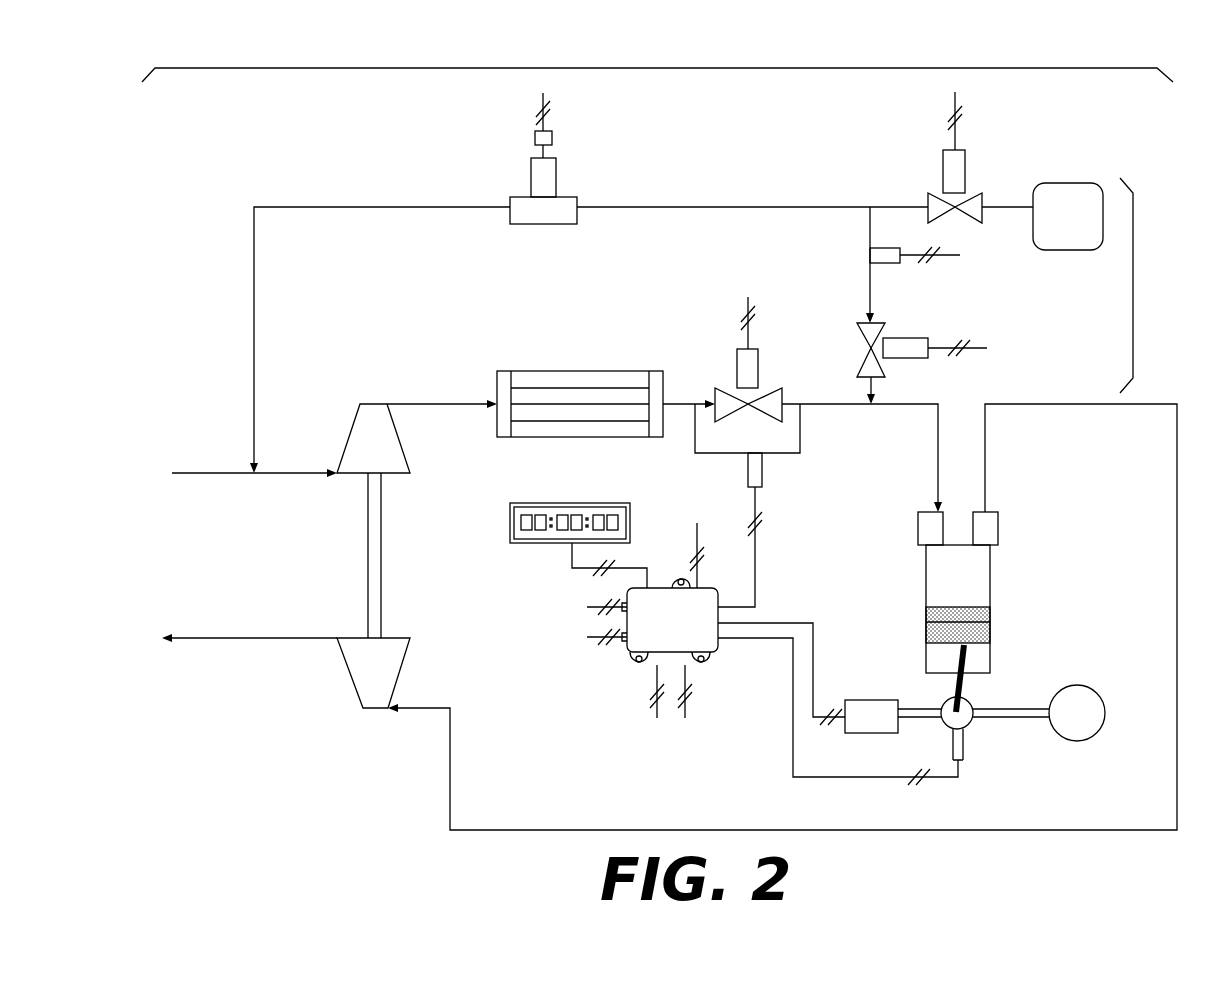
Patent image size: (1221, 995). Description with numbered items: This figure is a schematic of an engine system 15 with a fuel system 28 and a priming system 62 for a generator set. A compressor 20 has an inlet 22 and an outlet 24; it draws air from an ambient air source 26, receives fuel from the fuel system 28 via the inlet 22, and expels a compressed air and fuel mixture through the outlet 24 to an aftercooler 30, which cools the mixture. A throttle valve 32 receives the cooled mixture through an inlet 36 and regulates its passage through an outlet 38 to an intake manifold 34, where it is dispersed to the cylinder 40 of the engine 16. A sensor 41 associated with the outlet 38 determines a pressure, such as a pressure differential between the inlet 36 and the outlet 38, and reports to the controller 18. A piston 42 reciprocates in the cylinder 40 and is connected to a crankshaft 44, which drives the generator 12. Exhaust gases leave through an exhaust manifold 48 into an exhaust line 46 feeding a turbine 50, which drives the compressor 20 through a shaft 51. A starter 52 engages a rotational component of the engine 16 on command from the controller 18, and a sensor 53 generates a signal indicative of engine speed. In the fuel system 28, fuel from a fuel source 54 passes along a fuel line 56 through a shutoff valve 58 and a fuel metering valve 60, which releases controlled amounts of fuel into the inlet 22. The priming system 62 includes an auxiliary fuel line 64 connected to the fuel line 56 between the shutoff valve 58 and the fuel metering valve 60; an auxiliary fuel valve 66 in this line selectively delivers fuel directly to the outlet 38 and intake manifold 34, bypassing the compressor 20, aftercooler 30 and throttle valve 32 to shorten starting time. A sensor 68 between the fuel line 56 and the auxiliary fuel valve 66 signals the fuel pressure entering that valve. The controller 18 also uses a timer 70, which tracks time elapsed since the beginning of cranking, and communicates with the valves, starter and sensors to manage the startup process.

The generator 12 is at (1103, 735).
The engine system 15 is at (203, 181).
The engine 16 is at (1067, 613).
The controller 18 is at (683, 632).
The compressor 20 is at (381, 458).
The inlet 22 is at (303, 474).
The outlet 24 is at (408, 404).
The ambient air source 26 is at (160, 490).
The fuel system 28 is at (632, 68).
The aftercooler 30 is at (582, 371).
The throttle valve 32 is at (720, 324).
The intake manifold 34 is at (918, 528).
The inlet 36 is at (700, 400).
The outlet 38 is at (806, 407).
The cylinder 40 is at (972, 585).
The sensor 41 is at (762, 478).
The piston 42 is at (990, 613).
The crankshaft 44 is at (975, 700).
The exhaust line 46 is at (1103, 404).
The exhaust manifold 48 is at (998, 530).
The turbine 50 is at (385, 671).
The shaft 51 is at (383, 545).
The starter 52 is at (880, 729).
The sensor 53 is at (965, 752).
The fuel source 54 is at (1079, 225).
The fuel line 56 is at (762, 207).
The shutoff valve 58 is at (1000, 188).
The fuel metering valve 60 is at (510, 188).
The priming system 62 is at (1133, 290).
The auxiliary fuel line 64 is at (870, 280).
The auxiliary fuel valve 66 is at (910, 322).
The sensor 68 is at (888, 263).
The timer 70 is at (510, 513).